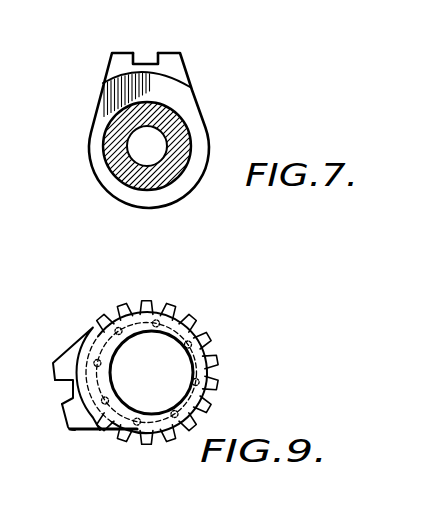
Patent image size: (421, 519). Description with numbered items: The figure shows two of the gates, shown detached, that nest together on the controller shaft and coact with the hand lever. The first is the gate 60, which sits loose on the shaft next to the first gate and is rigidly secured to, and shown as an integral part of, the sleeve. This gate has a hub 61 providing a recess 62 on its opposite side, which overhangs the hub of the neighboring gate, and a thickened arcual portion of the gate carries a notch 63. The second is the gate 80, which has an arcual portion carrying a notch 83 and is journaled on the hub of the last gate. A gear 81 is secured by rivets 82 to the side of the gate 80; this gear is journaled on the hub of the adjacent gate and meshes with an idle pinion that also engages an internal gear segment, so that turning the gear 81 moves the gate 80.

In FIG. 7, the gate 60 is at (102, 97).
In FIG. 7, the hub 61 is at (190, 138).
In FIG. 7, the recess 62 is at (114, 170).
In FIG. 7, the notch 63 is at (156, 53).
In FIG. 9, the gate 80 is at (89, 339).
In FIG. 9, the gear 81 is at (198, 323).
In FIG. 9, the rivets 82 is at (205, 386).
In FIG. 9, the notch 83 is at (64, 400).